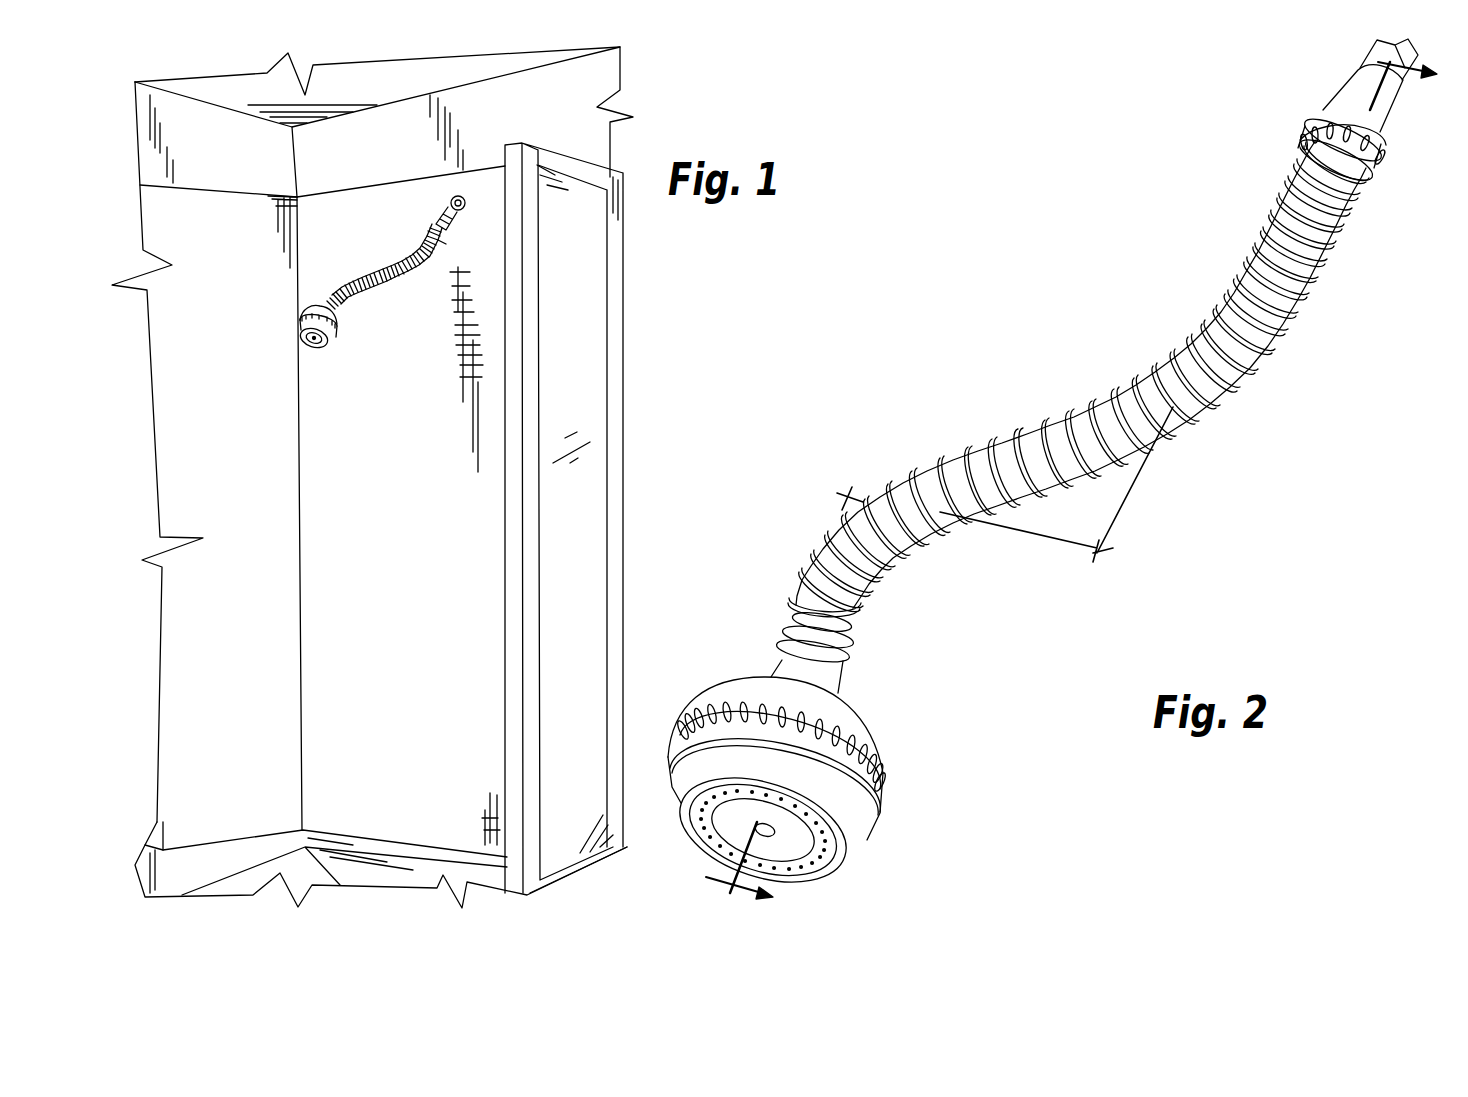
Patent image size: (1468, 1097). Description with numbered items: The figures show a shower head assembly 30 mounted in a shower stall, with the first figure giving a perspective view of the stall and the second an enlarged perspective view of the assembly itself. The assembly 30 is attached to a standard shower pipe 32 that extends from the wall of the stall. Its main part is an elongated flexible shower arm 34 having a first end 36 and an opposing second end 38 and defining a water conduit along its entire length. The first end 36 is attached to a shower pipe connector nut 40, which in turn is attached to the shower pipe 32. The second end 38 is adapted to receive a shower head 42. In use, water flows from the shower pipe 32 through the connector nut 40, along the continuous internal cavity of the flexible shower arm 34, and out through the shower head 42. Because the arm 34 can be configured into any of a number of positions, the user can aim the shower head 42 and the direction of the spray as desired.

In FIG. 1, the shower head assembly 30 is at (372, 318).
In FIG. 2, the shower head assembly 30 is at (1299, 459).
In FIG. 1, the shower pipe 32 is at (452, 198).
In FIG. 2, the shower pipe 32 is at (1402, 85).
In FIG. 1, the flexible shower arm 34 is at (378, 268).
In FIG. 2, the flexible shower arm 34 is at (1101, 408).
In FIG. 1, the first end 36 is at (443, 243).
In FIG. 2, the first end 36 is at (1353, 202).
In FIG. 1, the second end 38 is at (310, 308).
In FIG. 2, the second end 38 is at (852, 650).
In FIG. 1, the shower pipe connector nut 40 is at (449, 222).
In FIG. 2, the shower pipe connector nut 40 is at (1350, 108).
In FIG. 1, the shower head 42 is at (318, 350).
In FIG. 2, the shower head 42 is at (885, 820).